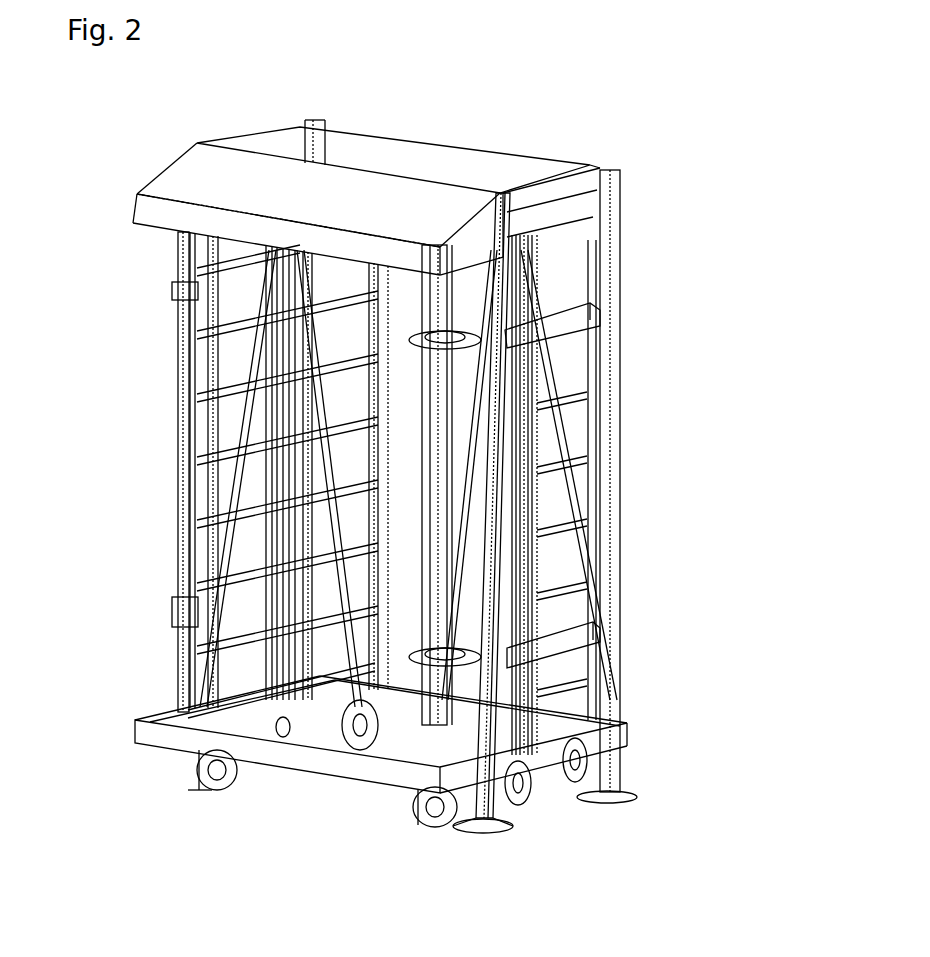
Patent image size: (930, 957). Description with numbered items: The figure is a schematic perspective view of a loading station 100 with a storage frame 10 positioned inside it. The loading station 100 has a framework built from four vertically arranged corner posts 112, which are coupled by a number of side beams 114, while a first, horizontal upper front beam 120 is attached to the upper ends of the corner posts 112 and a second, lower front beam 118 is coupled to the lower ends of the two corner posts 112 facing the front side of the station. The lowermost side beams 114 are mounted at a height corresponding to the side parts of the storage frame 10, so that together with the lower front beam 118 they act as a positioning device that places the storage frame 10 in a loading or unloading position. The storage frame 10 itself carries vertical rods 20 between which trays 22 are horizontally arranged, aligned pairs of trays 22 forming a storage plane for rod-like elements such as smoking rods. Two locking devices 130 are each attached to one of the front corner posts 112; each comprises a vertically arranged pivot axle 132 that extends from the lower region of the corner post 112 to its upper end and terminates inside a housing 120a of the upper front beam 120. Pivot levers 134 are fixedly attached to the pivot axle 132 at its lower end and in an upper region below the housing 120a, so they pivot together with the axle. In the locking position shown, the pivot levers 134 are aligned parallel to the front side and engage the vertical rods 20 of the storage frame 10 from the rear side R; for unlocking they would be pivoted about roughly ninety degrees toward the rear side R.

The loading station 100 is at (693, 68).
The storage frame 10 is at (113, 296).
The rear side R is at (450, 113).
The first, horizontal upper front beam 120 is at (172, 170).
The housing 120a is at (172, 215).
The locking device 130 is at (153, 484).
The pivot axle 132 is at (380, 470).
The pivot lever 134 is at (433, 323).
The tray 22 is at (350, 294).
The vertical rod 20 is at (197, 465).
The side beam 114 is at (590, 212).
The second, lower front beam 118 is at (312, 762).
The corner post 112 is at (493, 700).